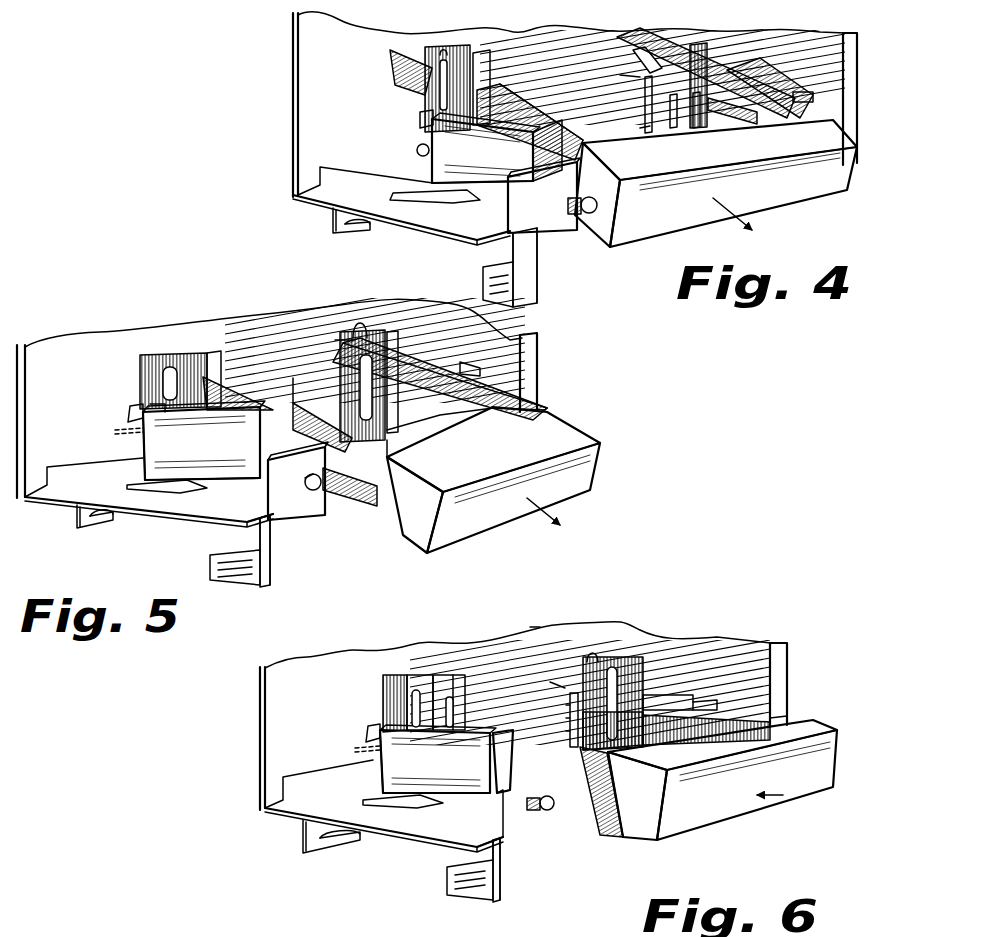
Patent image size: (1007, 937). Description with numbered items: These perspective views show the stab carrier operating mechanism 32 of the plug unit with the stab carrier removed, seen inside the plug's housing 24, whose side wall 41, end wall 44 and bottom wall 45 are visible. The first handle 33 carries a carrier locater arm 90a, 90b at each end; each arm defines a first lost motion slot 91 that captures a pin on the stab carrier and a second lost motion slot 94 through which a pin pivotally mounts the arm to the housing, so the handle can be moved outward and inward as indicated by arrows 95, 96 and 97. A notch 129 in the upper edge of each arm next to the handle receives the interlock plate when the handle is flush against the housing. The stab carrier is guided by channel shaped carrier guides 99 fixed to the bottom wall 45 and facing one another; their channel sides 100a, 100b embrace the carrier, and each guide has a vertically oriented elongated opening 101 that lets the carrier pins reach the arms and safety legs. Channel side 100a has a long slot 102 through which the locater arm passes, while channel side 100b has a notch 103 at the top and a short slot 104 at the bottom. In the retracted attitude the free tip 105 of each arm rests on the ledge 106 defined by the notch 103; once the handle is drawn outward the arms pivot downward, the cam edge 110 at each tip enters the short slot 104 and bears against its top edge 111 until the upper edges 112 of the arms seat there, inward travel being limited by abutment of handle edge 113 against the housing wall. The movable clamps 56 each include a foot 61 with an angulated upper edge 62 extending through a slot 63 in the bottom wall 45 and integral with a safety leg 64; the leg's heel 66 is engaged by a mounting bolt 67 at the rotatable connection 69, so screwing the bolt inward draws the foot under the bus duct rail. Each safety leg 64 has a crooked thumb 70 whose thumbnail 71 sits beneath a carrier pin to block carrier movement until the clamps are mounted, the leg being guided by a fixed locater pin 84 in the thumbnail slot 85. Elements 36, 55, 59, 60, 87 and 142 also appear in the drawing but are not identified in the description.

In FIG. 4, the housing 24 is at (296, 50).
In FIG. 5, the housing 24 is at (512, 346).
In FIG. 6, the housing 24 is at (545, 641).
In FIG. 4, the stab operating mechanism 32 is at (388, 105).
In FIG. 5, the stab operating mechanism 32 is at (313, 343).
In FIG. 6, the stab operating mechanism 32 is at (682, 647).
In FIG. 4, the first handle 33 is at (637, 225).
In FIG. 5, the first handle 33 is at (603, 465).
In FIG. 6, the first handle 33 is at (697, 822).
In FIG. 4, the mounting bracket assembly 36 is at (555, 288).
In FIG. 5, the mounting bracket assembly 36 is at (299, 555).
In FIG. 6, the mounting bracket assembly 36 is at (431, 874).
In FIG. 4, the side wall 41 is at (290, 98).
In FIG. 5, the side wall 41 is at (50, 355).
In FIG. 6, the side wall 41 is at (300, 670).
In FIG. 4, the end wall 44 is at (828, 99).
In FIG. 5, the end wall 44 is at (437, 320).
In FIG. 6, the end wall 44 is at (747, 655).
In FIG. 4, the bottom wall 45 is at (423, 217).
In FIG. 5, the bottom wall 45 is at (187, 502).
In FIG. 6, the bottom wall 45 is at (292, 815).
In FIG. 4, the rear bracket 55 is at (323, 223).
In FIG. 5, the rear bracket 55 is at (62, 522).
In FIG. 6, the rear bracket 55 is at (291, 841).
In FIG. 4, the movable clamp 56 is at (528, 273).
In FIG. 5, the movable clamp 56 is at (247, 586).
In FIG. 6, the movable clamp 56 is at (505, 880).
In FIG. 4, the hook 59 is at (357, 231).
In FIG. 5, the hook 59 is at (108, 525).
In FIG. 6, the hook 59 is at (340, 841).
In FIG. 4, the bracket leg 60 is at (335, 233).
In FIG. 5, the bracket leg 60 is at (80, 530).
In FIG. 6, the bracket leg 60 is at (303, 853).
In FIG. 4, the foot 61 is at (495, 288).
In FIG. 5, the foot 61 is at (220, 568).
In FIG. 6, the foot 61 is at (468, 894).
In FIG. 4, the angulated upper edge 62 is at (497, 267).
In FIG. 5, the angulated upper edge 62 is at (218, 555).
In FIG. 6, the angulated upper edge 62 is at (453, 865).
In FIG. 5, the slot 63 is at (235, 512).
In FIG. 6, the slot 63 is at (468, 838).
In FIG. 4, the safety leg 64 is at (497, 148).
In FIG. 5, the safety leg 64 is at (470, 355).
In FIG. 6, the safety leg 64 is at (705, 672).
In FIG. 4, the heel 66 is at (544, 195).
In FIG. 5, the heel 66 is at (500, 372).
In FIG. 6, the heel 66 is at (735, 683).
In FIG. 4, the mounting bolt 67 is at (572, 215).
In FIG. 5, the mounting bolt 67 is at (313, 492).
In FIG. 6, the mounting bolt 67 is at (547, 812).
In FIG. 5, the rotatable connection 69 is at (300, 483).
In FIG. 4, the crooked thumb 70 is at (446, 151).
In FIG. 5, the crooked thumb 70 is at (160, 446).
In FIG. 6, the crooked thumb 70 is at (395, 761).
In FIG. 4, the thumbnail 71 is at (428, 130).
In FIG. 5, the thumbnail 71 is at (130, 410).
In FIG. 6, the thumbnail 71 is at (372, 730).
In FIG. 4, the fixed locater pin 84 is at (420, 160).
In FIG. 5, the thumbnail slot 85 is at (133, 432).
In FIG. 6, the thumbnail slot 85 is at (380, 745).
In FIG. 4, the front wall 87 is at (482, 182).
In FIG. 5, the front wall 87 is at (202, 459).
In FIG. 6, the front wall 87 is at (436, 776).
In FIG. 4, the carrier locater arm 90a is at (567, 110).
In FIG. 5, the carrier locater arm 90a is at (370, 445).
In FIG. 6, the carrier locater arm 90a is at (612, 786).
In FIG. 4, the carrier locater arm 90b is at (790, 93).
In FIG. 5, the carrier locater arm 90b is at (540, 402).
In FIG. 6, the carrier locater arm 90b is at (757, 716).
In FIG. 4, the first lost motion slot 91 is at (422, 74).
In FIG. 5, the first lost motion slot 91 is at (425, 352).
In FIG. 6, the first lost motion slot 91 is at (628, 735).
In FIG. 4, the second lost motion slot 94 is at (735, 112).
In FIG. 5, the second lost motion slot 94 is at (367, 518).
In FIG. 6, the second lost motion slot 94 is at (593, 823).
In FIG. 4, the arrow 95 is at (733, 206).
In FIG. 5, the arrow 96 is at (543, 502).
In FIG. 6, the arrow 97 is at (778, 792).
In FIG. 4, the carrier guide 99 is at (462, 64).
In FIG. 5, the carrier guide 99 is at (163, 362).
In FIG. 6, the carrier guide 99 is at (393, 680).
In FIG. 4, the channel side 100a is at (490, 73).
In FIG. 5, the channel side 100a is at (213, 358).
In FIG. 6, the channel side 100a is at (462, 680).
In FIG. 5, the channel side 100b is at (310, 398).
In FIG. 6, the channel side 100b is at (541, 676).
In FIG. 4, the elongated opening 101 is at (442, 64).
In FIG. 5, the elongated opening 101 is at (187, 364).
In FIG. 6, the elongated opening 101 is at (415, 685).
In FIG. 4, the long slot 102 is at (492, 95).
In FIG. 5, the long slot 102 is at (435, 440).
In FIG. 6, the long slot 102 is at (447, 697).
In FIG. 4, the notch 103 is at (632, 75).
In FIG. 5, the notch 103 is at (350, 340).
In FIG. 6, the notch 103 is at (560, 707).
In FIG. 4, the short slot 104 is at (645, 142).
In FIG. 6, the short slot 104 is at (560, 733).
In FIG. 4, the free tip 105 is at (400, 55).
In FIG. 5, the free tip 105 is at (300, 375).
In FIG. 6, the ledge 106 is at (560, 720).
In FIG. 4, the cam edge 110 is at (392, 22).
In FIG. 5, the cam edge 110 is at (357, 345).
In FIG. 6, the cam edge 110 is at (593, 660).
In FIG. 6, the top edge 111 is at (580, 690).
In FIG. 4, the upper edge 112 is at (497, 88).
In FIG. 5, the upper edge 112 is at (258, 360).
In FIG. 6, the upper edge 112 is at (706, 734).
In FIG. 4, the handle edge 113 is at (697, 168).
In FIG. 5, the handle edge 113 is at (473, 443).
In FIG. 6, the handle edge 113 is at (752, 750).
In FIG. 4, the notch 129 is at (597, 195).
In FIG. 5, the notch 129 is at (553, 412).
In FIG. 6, the notch 129 is at (668, 778).
In FIG. 5, the spring 142 is at (179, 399).